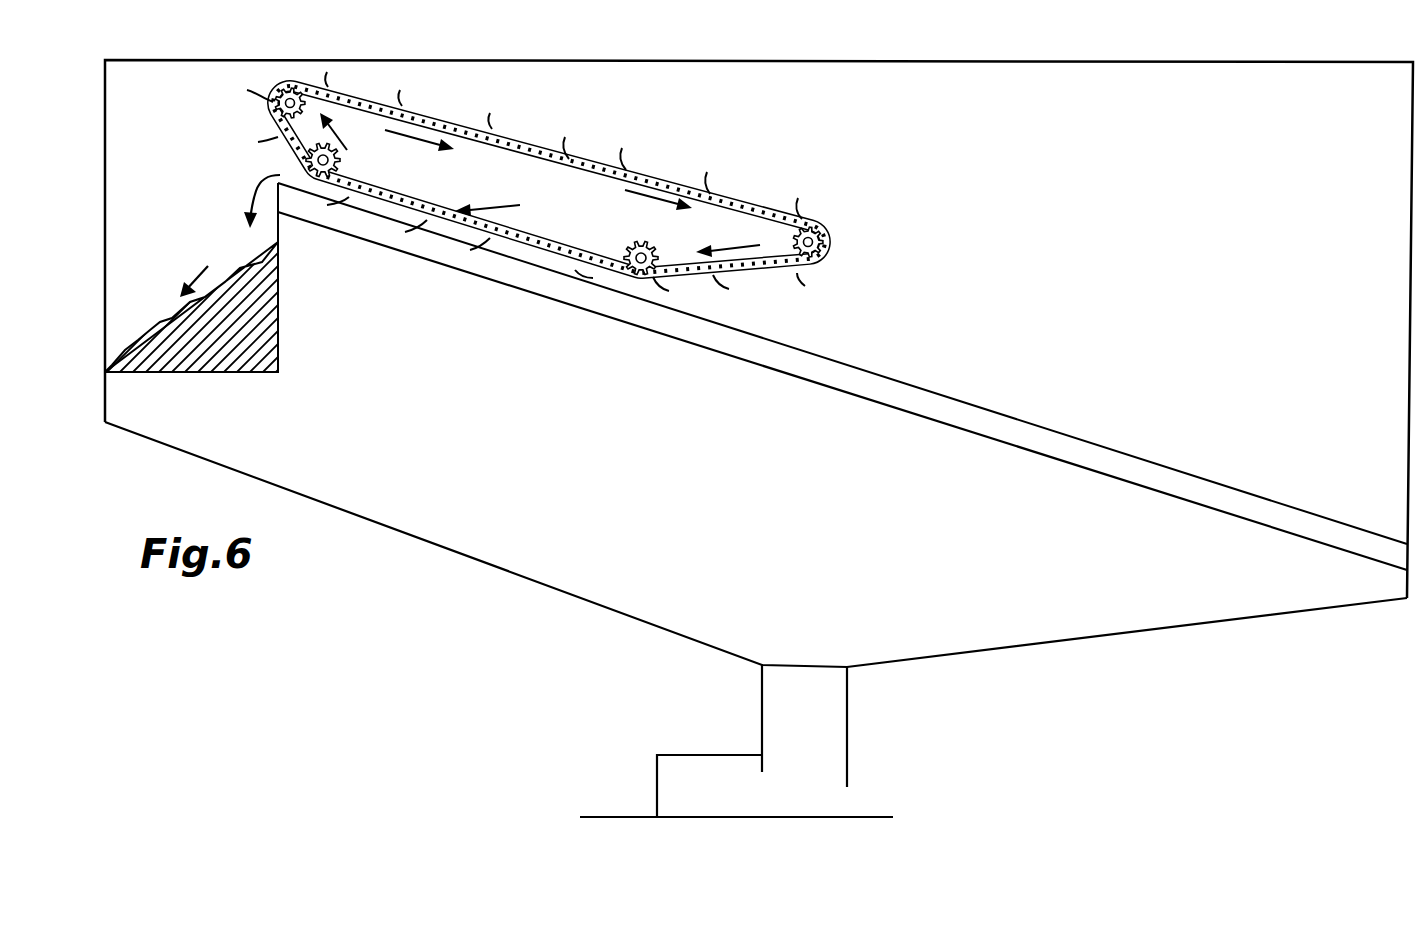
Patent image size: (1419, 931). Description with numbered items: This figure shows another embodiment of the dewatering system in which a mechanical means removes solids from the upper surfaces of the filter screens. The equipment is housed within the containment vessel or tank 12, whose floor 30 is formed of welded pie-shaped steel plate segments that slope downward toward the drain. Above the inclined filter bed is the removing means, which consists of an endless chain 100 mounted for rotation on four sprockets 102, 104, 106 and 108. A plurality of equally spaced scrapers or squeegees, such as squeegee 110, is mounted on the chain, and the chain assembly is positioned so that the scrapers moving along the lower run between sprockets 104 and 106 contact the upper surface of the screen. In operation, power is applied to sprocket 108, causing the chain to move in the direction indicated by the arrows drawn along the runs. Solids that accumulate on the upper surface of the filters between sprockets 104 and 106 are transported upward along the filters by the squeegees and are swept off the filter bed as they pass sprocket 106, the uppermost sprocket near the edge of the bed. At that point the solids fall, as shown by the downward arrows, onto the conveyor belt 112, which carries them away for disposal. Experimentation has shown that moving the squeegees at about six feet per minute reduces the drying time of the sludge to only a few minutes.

The containment vessel or tank 12 is at (845, 60).
The floor 30 is at (452, 548).
The endless chain 100 is at (521, 144).
The sprocket 102 is at (830, 240).
The sprocket 104 is at (640, 278).
The sprocket 106 is at (315, 179).
The sprocket 108 is at (274, 107).
The squeegee 110 is at (718, 280).
The conveyor belt 112 is at (160, 312).